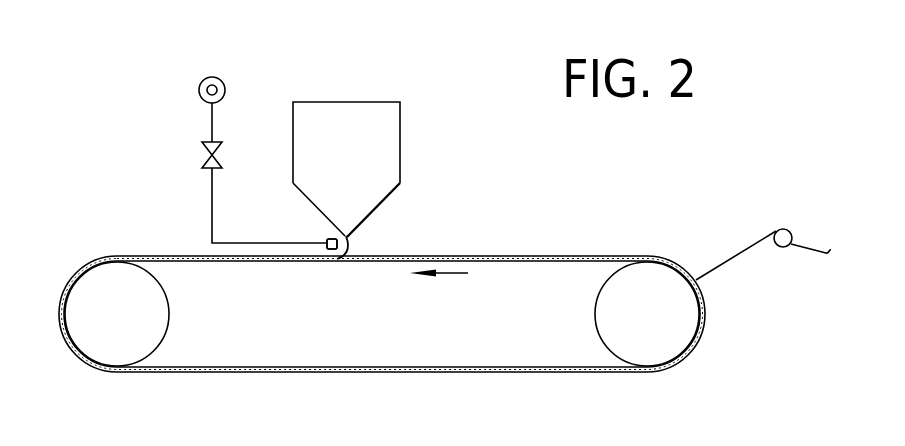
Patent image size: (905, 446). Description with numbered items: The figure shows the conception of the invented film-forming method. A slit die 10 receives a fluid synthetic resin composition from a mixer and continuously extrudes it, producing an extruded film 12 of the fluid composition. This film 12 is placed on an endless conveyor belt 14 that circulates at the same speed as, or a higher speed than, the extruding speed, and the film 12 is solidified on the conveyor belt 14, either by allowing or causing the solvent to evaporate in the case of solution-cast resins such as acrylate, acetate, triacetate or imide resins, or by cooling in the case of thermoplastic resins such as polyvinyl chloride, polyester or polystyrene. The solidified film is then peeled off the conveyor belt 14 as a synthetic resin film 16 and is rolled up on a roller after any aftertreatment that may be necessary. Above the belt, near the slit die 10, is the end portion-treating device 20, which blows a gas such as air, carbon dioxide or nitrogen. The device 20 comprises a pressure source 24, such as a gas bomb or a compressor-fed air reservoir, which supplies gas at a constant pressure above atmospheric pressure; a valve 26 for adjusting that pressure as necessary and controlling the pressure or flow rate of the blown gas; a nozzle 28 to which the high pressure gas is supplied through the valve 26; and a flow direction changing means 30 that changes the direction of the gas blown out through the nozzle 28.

The slit die 10 is at (389, 172).
The extruded film 12 is at (350, 242).
The endless conveyor belt 14 is at (528, 259).
The synthetic resin film 16 is at (737, 254).
The end portion-treating device 20 is at (188, 207).
The pressure source 24 is at (217, 77).
The valve 26 is at (217, 137).
The nozzle 28 is at (330, 258).
The flow direction changing means 30 is at (333, 292).